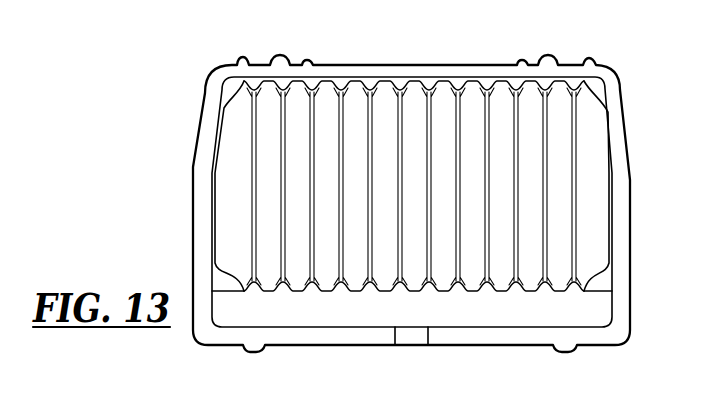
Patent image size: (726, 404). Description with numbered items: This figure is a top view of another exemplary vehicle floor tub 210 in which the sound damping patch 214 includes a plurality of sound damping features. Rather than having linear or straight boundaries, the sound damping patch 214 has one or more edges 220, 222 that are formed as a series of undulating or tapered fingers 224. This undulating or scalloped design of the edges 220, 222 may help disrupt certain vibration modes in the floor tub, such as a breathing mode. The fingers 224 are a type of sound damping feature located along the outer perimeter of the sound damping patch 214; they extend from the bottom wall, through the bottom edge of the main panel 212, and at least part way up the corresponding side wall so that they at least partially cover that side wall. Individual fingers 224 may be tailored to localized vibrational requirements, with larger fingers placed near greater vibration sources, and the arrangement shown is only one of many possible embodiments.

The vehicle floor tub 210 is at (178, 111).
The main panel 212 is at (620, 302).
The sound damping patch 214 is at (600, 121).
The edge 220 is at (364, 87).
The edge 222 is at (431, 288).
The fingers 224 is at (473, 88).